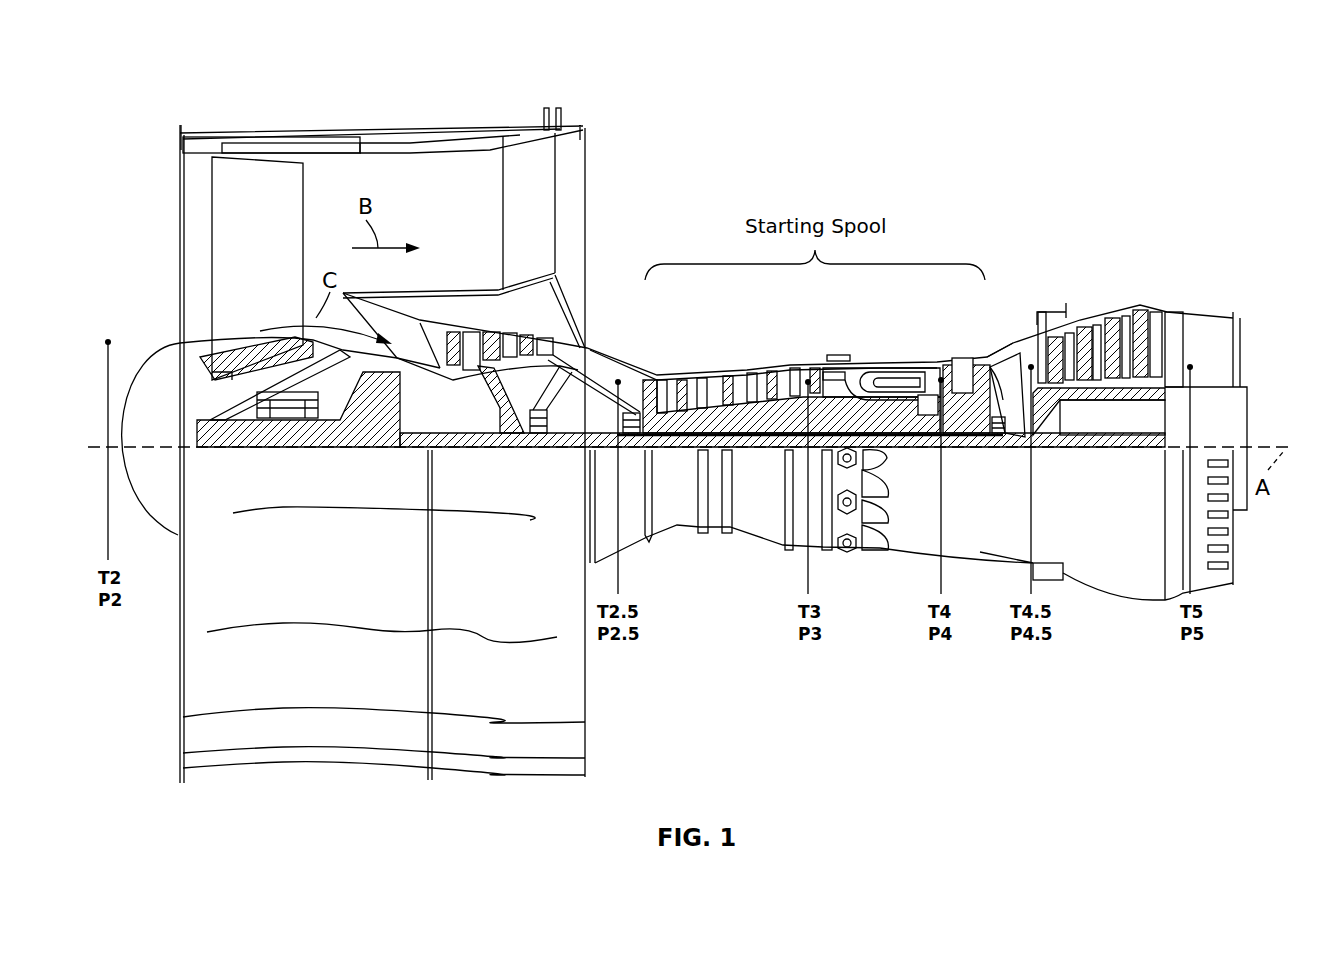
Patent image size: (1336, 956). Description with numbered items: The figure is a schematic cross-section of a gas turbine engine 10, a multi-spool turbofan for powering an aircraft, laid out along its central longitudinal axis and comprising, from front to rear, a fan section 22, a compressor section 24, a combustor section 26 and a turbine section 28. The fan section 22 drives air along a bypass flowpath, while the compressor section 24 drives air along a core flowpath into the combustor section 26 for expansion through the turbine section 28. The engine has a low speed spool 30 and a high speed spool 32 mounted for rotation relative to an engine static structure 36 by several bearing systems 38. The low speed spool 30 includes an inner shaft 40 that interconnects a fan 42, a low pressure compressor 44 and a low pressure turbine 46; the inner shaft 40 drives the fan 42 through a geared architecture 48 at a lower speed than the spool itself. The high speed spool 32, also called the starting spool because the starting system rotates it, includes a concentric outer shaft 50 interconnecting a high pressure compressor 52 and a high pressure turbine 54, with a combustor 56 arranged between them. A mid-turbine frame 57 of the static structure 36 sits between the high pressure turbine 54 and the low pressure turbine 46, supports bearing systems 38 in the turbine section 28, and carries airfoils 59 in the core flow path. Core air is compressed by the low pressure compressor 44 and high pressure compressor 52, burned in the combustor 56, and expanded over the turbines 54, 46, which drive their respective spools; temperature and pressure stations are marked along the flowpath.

The gas turbine engine 10 is at (1090, 173).
The fan section 22 is at (268, 126).
The compressor section 24 is at (621, 349).
The combustor section 26 is at (858, 346).
The turbine section 28 is at (1056, 301).
The low speed spool 30 is at (773, 450).
The high speed spool 32 is at (777, 400).
The engine static structure 36 is at (799, 565).
The bearing systems 38 is at (538, 430).
The inner shaft 40 is at (577, 445).
The fan 42 is at (269, 306).
The low pressure compressor 44 is at (513, 338).
The low pressure turbine 46 is at (1080, 333).
The geared architecture 48 is at (385, 432).
The outer shaft 50 is at (915, 425).
The high pressure compressor 52 is at (722, 377).
The high pressure turbine 54 is at (965, 372).
The combustor 56 is at (897, 382).
The mid-turbine frame 57 is at (1005, 353).
The airfoils 59 is at (1003, 373).